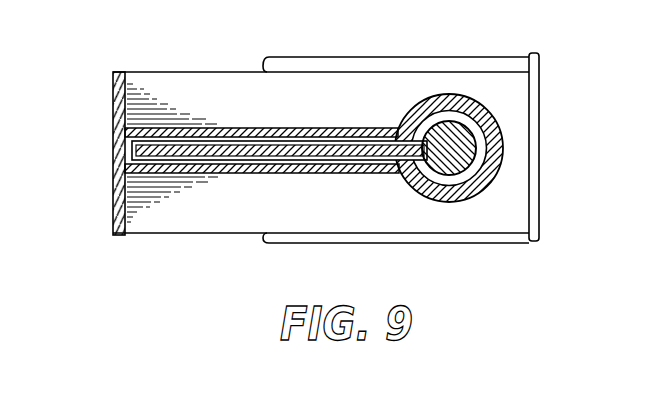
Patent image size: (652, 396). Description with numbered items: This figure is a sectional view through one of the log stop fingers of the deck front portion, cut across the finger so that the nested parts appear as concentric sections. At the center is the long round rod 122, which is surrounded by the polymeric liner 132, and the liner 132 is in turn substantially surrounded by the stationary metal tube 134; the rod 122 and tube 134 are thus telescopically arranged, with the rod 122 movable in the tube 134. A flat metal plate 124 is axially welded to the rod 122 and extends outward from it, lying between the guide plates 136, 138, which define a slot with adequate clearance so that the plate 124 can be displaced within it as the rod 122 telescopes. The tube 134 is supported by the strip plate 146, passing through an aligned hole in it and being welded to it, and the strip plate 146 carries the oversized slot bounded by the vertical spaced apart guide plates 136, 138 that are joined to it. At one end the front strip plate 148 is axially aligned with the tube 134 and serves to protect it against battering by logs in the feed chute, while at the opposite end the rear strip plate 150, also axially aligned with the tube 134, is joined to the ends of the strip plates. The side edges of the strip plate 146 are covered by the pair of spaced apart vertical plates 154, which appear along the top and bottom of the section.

The round rod 122 is at (467, 147).
The flat metal plate 124 is at (220, 153).
The polymeric liner 132 is at (465, 176).
The stationary metal tube 134 is at (453, 93).
The guide plate 136 is at (197, 127).
The guide plate 138 is at (328, 173).
The strip plate 146 is at (159, 80).
The front strip plate 148 is at (542, 92).
The rear strip plate 150 is at (118, 106).
The vertical plate 154 is at (355, 62).